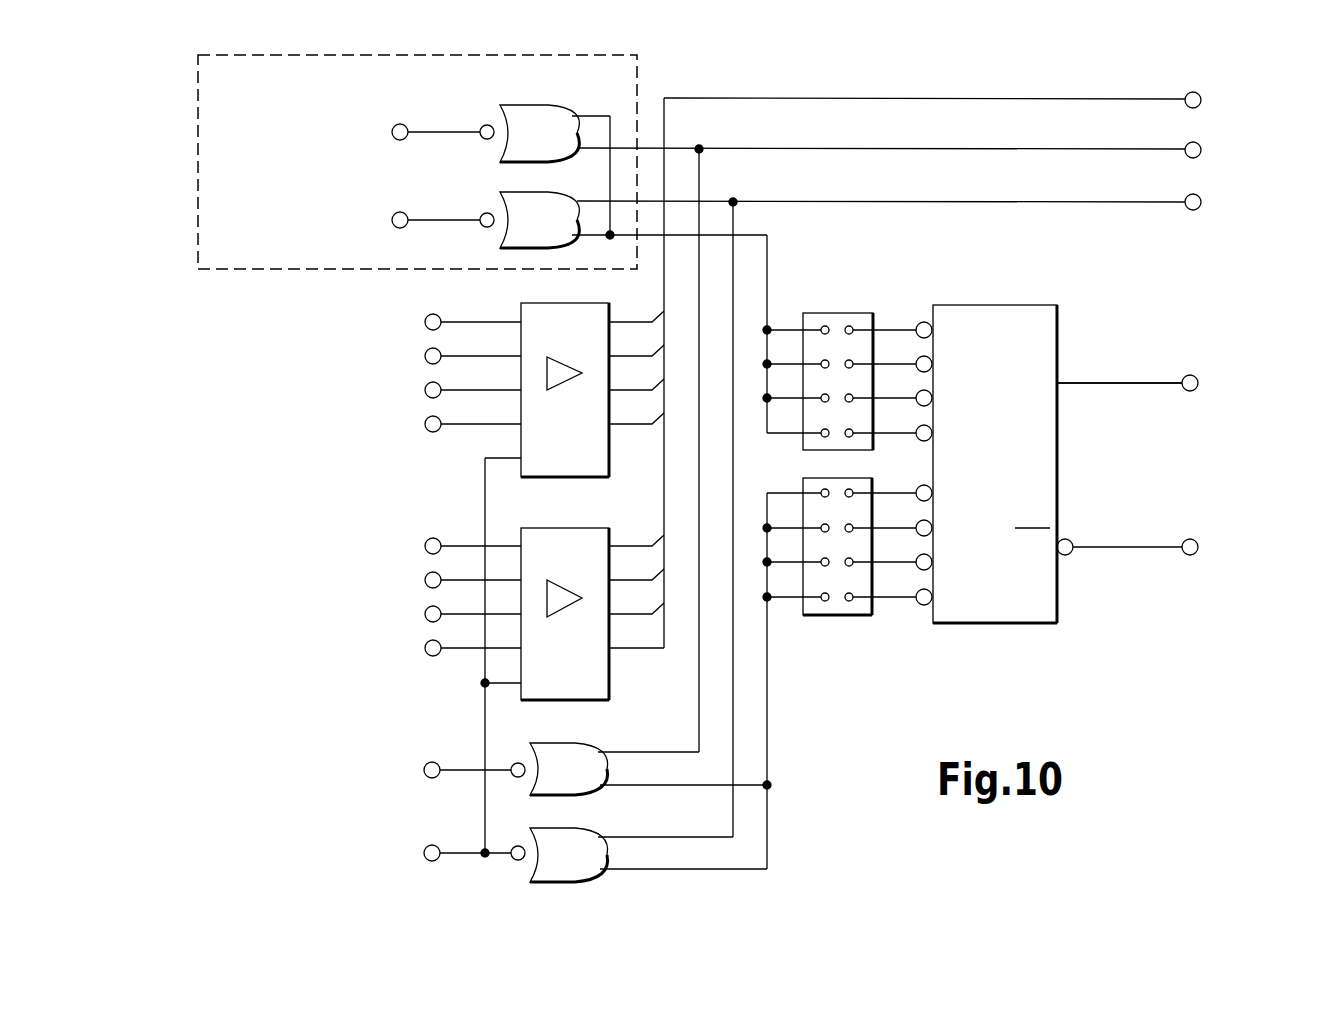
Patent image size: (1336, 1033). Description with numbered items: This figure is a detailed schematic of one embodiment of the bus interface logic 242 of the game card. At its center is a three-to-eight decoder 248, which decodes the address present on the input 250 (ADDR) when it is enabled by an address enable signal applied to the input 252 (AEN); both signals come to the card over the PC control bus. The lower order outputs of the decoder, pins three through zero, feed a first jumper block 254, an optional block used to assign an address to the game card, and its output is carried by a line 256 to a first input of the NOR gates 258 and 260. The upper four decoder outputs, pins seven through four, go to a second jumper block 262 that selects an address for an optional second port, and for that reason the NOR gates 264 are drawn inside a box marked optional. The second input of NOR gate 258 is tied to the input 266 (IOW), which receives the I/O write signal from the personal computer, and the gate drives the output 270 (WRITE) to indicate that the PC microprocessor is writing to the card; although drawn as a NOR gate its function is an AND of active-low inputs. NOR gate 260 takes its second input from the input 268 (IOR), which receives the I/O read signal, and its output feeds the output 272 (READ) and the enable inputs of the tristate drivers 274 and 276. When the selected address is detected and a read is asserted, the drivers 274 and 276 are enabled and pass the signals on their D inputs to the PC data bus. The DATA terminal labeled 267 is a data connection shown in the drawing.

The bus interface logic 242 is at (1190, 664).
The 3-to-8 decoder 248 is at (978, 305).
The input (ADDR) 250 is at (1190, 372).
The input (AEN) 252 is at (1190, 537).
The first jumper block 254 is at (836, 634).
The line 256 is at (767, 740).
The NOR gate 258 is at (597, 797).
The NOR gate 260 is at (592, 884).
The second jumper block 262 is at (834, 298).
The NOR gates 264 is at (178, 166).
The input (IOW) 266 is at (1190, 158).
The DATA terminal 267 is at (1190, 92).
The input (IOR) 268 is at (1188, 210).
The output (WRITE) 270 is at (433, 762).
The output (READ) 272 is at (433, 862).
The tristate driver 274 is at (590, 478).
The tristate driver 276 is at (575, 701).